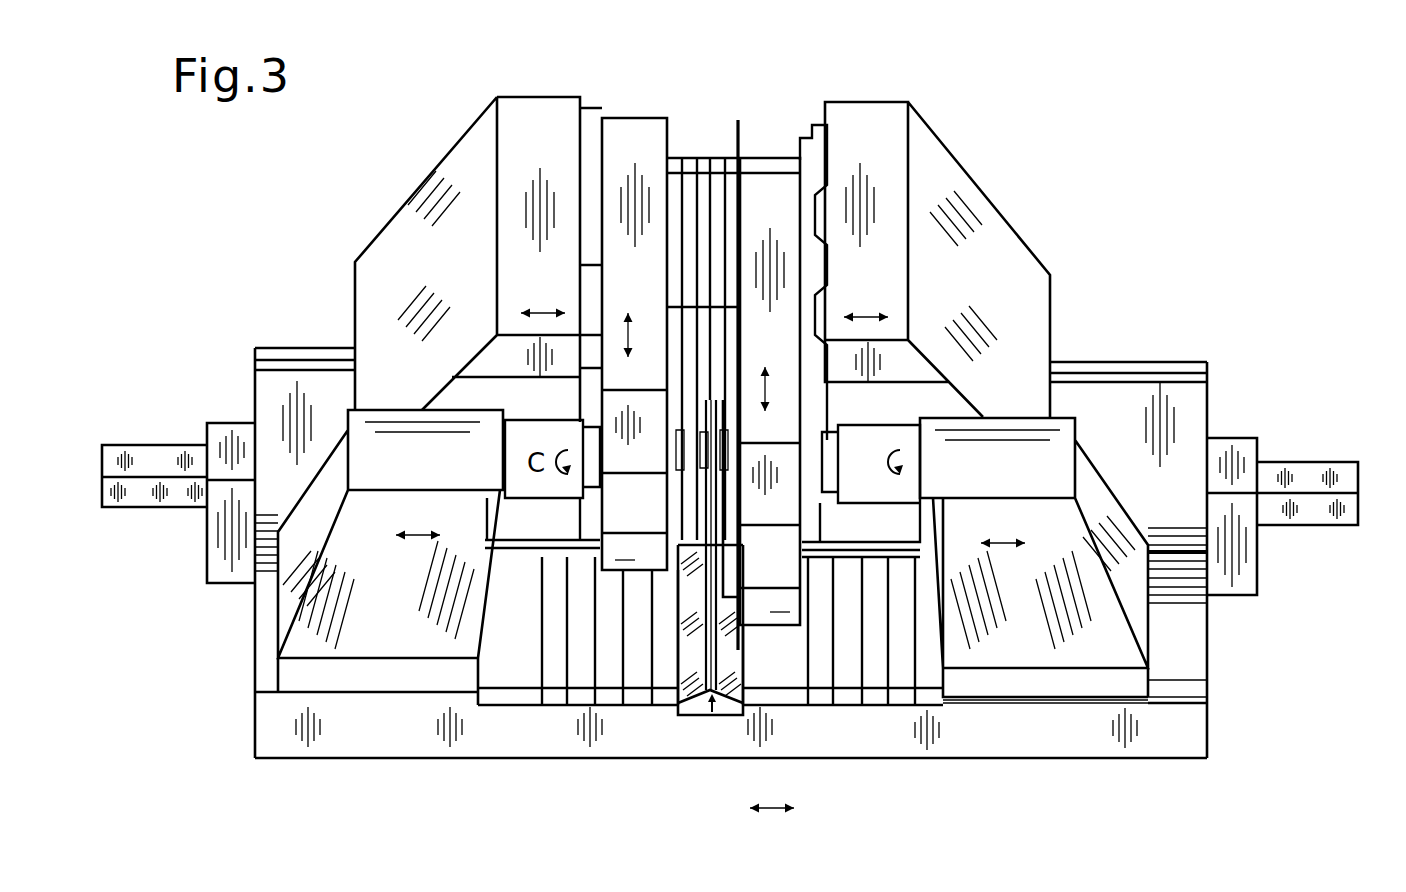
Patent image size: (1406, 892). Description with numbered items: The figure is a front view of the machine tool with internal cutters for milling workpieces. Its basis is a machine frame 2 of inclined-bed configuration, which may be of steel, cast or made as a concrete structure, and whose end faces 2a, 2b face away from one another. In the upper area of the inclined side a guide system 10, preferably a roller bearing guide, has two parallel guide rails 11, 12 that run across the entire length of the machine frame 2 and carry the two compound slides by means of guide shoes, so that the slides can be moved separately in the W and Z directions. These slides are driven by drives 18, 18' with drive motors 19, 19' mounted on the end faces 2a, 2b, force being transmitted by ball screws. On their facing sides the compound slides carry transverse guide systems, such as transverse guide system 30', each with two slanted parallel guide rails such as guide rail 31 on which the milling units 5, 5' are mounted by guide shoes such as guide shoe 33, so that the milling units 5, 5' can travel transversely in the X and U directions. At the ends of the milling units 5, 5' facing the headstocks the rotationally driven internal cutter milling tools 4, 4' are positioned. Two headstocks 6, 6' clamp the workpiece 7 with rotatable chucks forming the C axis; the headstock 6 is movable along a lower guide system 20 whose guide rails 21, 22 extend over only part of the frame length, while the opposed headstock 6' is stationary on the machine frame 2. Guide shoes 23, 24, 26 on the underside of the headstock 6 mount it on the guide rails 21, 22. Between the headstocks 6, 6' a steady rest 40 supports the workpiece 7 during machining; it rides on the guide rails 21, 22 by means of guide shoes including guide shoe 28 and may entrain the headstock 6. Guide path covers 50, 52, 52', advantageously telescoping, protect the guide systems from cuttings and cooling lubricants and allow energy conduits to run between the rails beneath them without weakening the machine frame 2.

The machine frame 2 is at (1178, 742).
The end face 2a is at (255, 620).
The end face 2b is at (1207, 665).
The internal cutter milling tool 4 is at (780, 684).
The internal cutter milling tool 4' is at (626, 684).
The milling unit 5 is at (761, 363).
The milling unit 5' is at (634, 313).
The headstock 6 is at (1034, 612).
The headstock 6' is at (390, 611).
The workpiece 7 is at (840, 443).
The guide system 10 is at (1185, 428).
The guide rail 11 is at (1188, 365).
The guide rail 12 is at (1190, 535).
The drive 18 is at (1256, 504).
The drive 18' is at (211, 475).
The drive motor 19 is at (1329, 481).
The drive motor 19' is at (154, 448).
The guide system 20 is at (1185, 636).
The guide rail 21 is at (1195, 587).
The guide rail 22 is at (1190, 688).
The guide shoe 23 is at (728, 707).
The guide shoe 24 is at (1113, 703).
The guide shoe 26 is at (982, 700).
The guide shoe 28 is at (713, 715).
The transverse guide system 30' is at (478, 230).
The guide rail 31 is at (815, 135).
The guide shoe 33 is at (823, 298).
The steady rest 40 is at (700, 705).
The guide path cover 50 is at (705, 190).
The guide path cover 52 is at (843, 683).
The guide path cover 52' is at (578, 685).